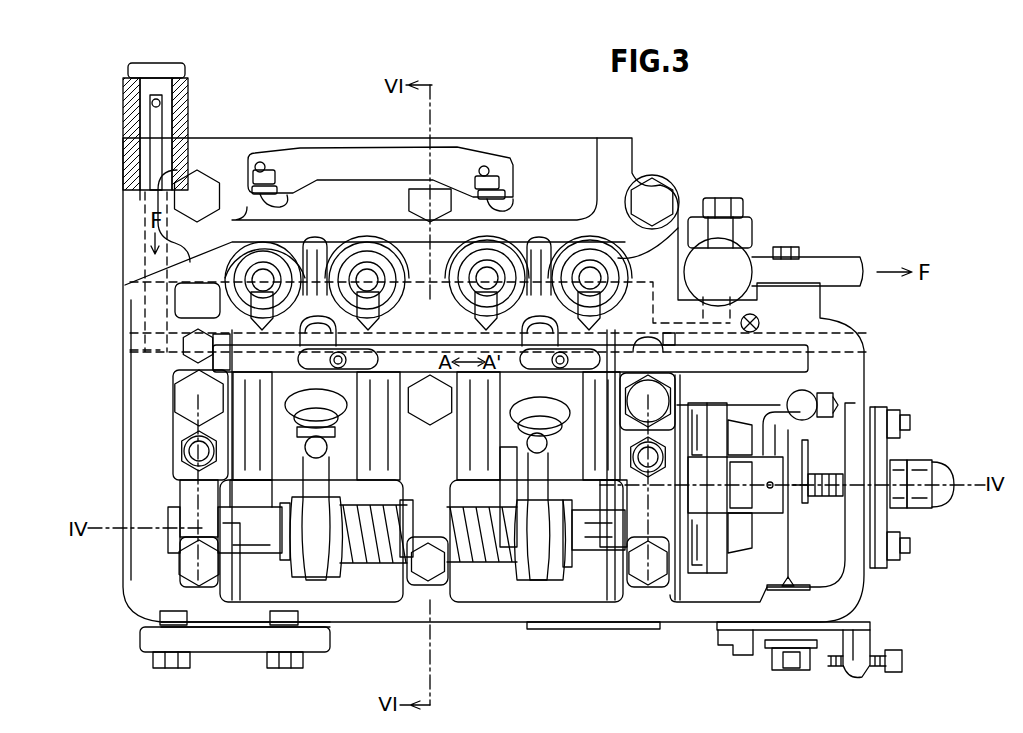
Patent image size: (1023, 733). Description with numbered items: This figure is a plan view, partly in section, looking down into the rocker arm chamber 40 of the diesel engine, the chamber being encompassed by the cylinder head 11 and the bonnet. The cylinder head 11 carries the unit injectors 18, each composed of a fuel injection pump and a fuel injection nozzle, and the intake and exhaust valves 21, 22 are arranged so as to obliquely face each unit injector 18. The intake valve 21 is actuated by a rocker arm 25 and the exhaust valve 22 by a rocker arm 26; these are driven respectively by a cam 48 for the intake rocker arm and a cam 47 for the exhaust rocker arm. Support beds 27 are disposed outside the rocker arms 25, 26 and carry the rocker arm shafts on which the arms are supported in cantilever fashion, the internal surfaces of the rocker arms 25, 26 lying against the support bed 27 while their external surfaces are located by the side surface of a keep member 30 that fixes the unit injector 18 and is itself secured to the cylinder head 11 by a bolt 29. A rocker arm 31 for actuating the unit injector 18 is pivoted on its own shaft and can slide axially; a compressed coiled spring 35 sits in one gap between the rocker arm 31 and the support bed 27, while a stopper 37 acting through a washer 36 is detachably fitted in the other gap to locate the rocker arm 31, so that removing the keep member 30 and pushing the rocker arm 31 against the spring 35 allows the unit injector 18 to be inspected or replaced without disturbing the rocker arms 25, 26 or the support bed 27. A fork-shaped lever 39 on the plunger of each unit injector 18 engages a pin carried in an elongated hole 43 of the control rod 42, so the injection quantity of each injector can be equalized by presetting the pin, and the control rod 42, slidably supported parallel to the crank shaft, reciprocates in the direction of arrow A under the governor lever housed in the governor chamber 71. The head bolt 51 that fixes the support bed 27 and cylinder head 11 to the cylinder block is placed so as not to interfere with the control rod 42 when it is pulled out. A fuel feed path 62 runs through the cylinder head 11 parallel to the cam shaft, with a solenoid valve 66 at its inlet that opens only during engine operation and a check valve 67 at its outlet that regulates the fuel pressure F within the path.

The cylinder head 11 is at (438, 603).
The unit injector 18 is at (335, 510).
The intake valve 21 is at (240, 250).
The exhaust valve 22 is at (336, 275).
The rocker arm 25 is at (493, 273).
The rocker arm 26 is at (359, 268).
The support bed 27 is at (188, 495).
The bolt 29 is at (270, 273).
The keep member 30 is at (300, 253).
The rocker arm 31 is at (538, 537).
The coiled spring 35 is at (374, 500).
The washer 36 is at (300, 562).
The stopper 37 is at (297, 557).
The fork-shaped lever 39 is at (320, 382).
The rocker arm chamber 40 is at (542, 590).
The control rod 42 is at (800, 358).
The elongated hole 43 is at (298, 338).
The cam 47 is at (367, 493).
The cam 48 is at (282, 547).
The head bolt 51 is at (190, 392).
The fuel feed path 62 is at (162, 353).
The solenoid valve 66 is at (130, 130).
The check valve 67 is at (750, 252).
The governor chamber 71 is at (780, 547).